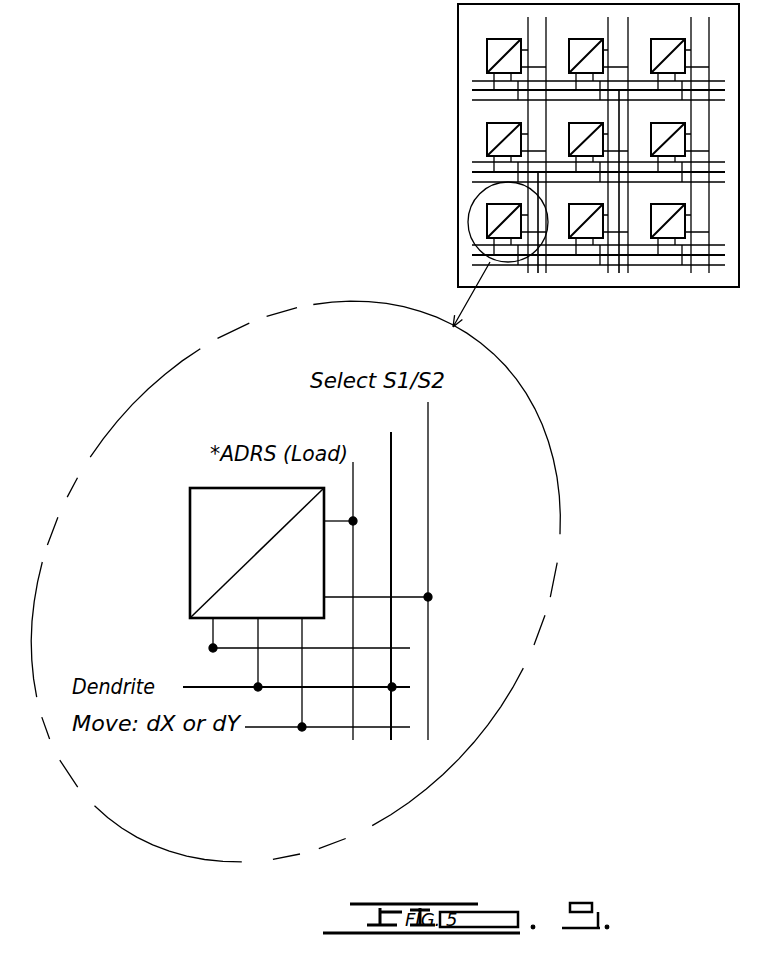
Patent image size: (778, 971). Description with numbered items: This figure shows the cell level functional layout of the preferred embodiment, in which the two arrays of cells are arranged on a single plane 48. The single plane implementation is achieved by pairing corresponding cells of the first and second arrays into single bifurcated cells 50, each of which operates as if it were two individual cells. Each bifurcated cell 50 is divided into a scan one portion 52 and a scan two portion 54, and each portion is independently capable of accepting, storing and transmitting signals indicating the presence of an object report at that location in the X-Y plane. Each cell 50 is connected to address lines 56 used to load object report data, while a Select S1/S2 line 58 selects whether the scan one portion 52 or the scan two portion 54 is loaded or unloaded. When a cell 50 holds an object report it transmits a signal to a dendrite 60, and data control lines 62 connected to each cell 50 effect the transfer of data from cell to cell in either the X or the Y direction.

The single plane 48 is at (697, 290).
The bifurcated cell 50 is at (487, 219).
The scan one portion 52 is at (205, 581).
The scan two portion 54 is at (312, 551).
The address line 56 is at (353, 472).
The Select S1/S2 line 58 is at (428, 427).
The dendrite 60 is at (258, 666).
The data control line 62 is at (283, 728).